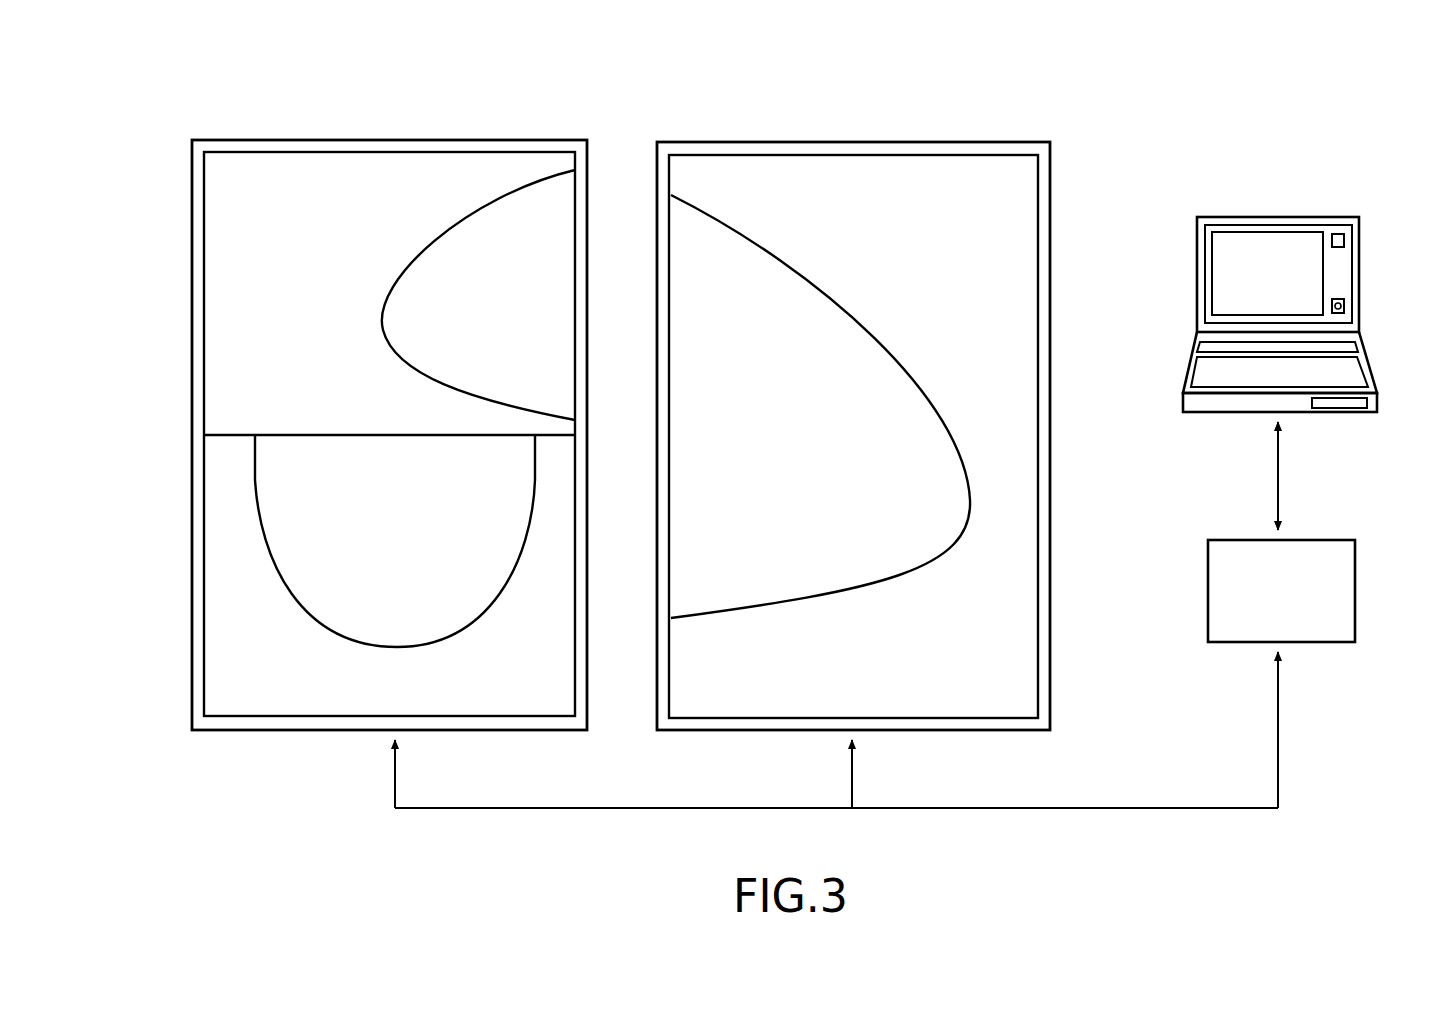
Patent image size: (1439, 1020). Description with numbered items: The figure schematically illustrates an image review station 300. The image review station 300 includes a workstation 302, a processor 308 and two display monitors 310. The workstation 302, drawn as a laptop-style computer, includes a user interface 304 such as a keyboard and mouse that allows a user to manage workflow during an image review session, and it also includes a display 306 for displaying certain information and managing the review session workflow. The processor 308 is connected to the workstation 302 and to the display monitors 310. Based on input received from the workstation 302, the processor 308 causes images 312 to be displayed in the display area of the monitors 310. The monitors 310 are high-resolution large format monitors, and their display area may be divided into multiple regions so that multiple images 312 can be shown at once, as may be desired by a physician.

The image review station 300 is at (968, 84).
The workstation 302 is at (1308, 284).
The user interface 304 is at (1345, 373).
The display 306 is at (1315, 270).
The processor 308 is at (1318, 642).
The display monitors 310 is at (513, 140).
The images 312 is at (225, 412).